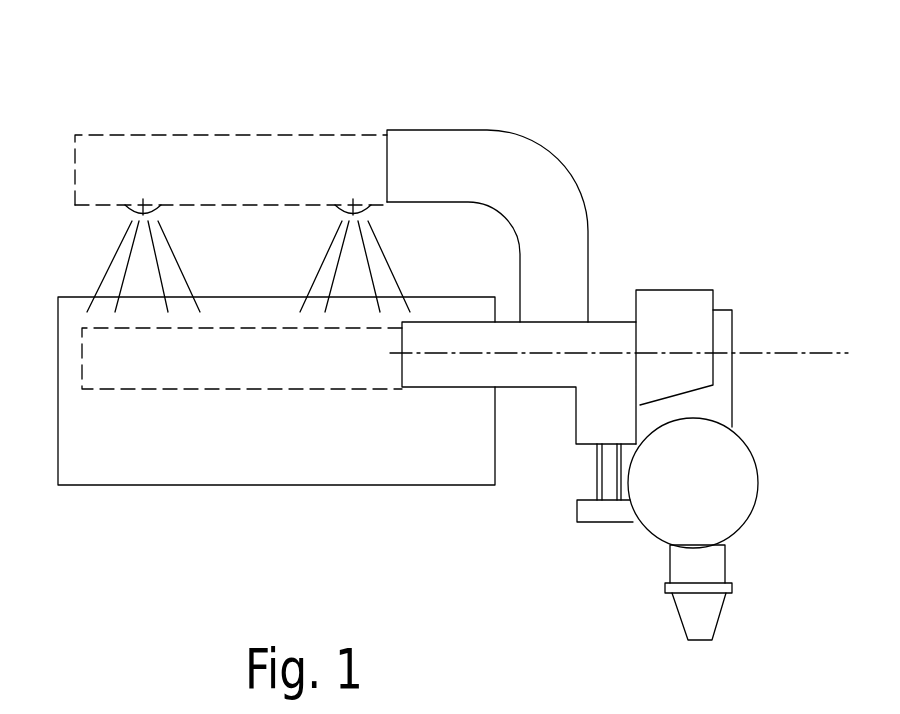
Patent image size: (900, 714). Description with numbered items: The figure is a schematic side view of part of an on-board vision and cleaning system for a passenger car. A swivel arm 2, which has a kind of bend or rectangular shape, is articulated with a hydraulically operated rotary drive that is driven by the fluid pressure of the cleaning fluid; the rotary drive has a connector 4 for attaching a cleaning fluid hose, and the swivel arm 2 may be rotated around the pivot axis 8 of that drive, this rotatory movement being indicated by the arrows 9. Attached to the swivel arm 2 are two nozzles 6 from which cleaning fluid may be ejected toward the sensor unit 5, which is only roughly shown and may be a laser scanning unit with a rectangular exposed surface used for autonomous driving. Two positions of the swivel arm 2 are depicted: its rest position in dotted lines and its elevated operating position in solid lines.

The swivel arm 2 is at (477, 160).
The connector 4 is at (732, 588).
The sensor unit 5 is at (283, 466).
The nozzles 6 is at (143, 206).
The pivot axis 8 is at (810, 352).
The arrows 9 is at (733, 216).